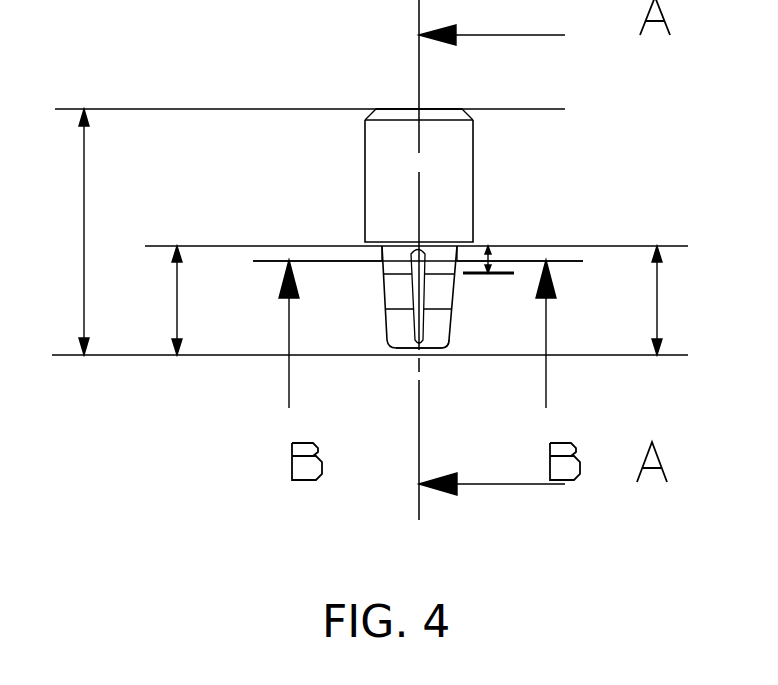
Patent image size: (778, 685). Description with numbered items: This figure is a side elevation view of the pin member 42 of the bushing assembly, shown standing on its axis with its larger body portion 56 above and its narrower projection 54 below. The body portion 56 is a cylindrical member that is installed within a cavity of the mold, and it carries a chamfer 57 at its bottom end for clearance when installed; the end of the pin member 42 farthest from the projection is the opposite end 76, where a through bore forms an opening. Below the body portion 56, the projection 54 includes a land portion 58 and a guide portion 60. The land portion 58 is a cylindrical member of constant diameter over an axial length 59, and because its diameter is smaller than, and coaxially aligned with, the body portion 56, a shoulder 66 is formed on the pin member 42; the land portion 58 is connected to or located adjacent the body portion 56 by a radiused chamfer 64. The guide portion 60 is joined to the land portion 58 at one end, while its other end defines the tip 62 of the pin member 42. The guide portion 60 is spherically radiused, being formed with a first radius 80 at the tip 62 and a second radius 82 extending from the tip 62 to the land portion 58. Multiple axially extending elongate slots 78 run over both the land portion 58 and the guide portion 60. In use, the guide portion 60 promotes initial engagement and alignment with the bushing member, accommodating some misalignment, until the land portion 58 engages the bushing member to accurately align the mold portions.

The pin member 42 is at (441, 240).
The projection 54 is at (409, 302).
The body portion 56 is at (477, 153).
The chamfer 57 is at (447, 117).
The land portion 58 is at (397, 255).
The axial length 59 is at (485, 257).
The guide portion 60 is at (453, 298).
The tip 62 is at (405, 358).
The radiused chamfer 64 is at (405, 255).
The shoulder 66 is at (378, 250).
The opposite end 76 is at (392, 107).
The elongate slots 78 is at (421, 318).
The first radius 80 is at (433, 353).
The second radius 82 is at (381, 304).